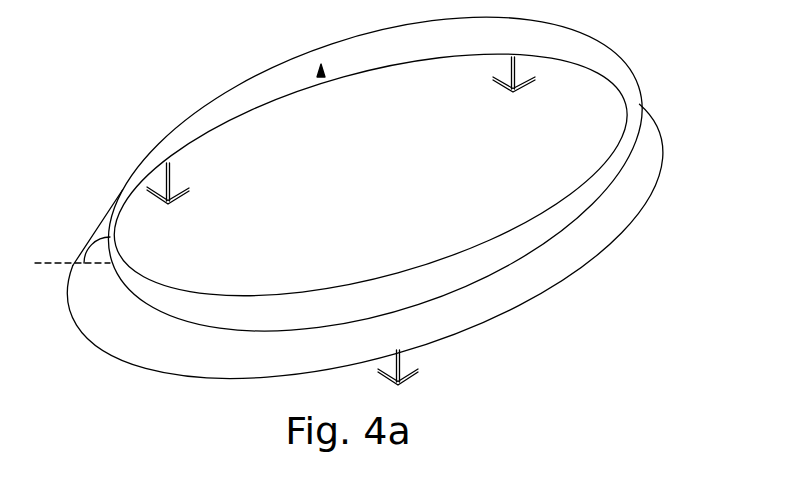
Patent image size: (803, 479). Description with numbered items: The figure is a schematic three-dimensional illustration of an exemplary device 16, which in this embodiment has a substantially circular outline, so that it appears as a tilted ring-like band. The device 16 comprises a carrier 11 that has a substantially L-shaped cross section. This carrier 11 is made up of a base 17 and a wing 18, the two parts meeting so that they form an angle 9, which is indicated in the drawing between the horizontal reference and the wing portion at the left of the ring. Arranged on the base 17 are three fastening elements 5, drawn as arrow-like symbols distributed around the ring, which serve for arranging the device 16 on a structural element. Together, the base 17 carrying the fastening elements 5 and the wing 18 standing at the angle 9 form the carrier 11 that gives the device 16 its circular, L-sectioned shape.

The fastening elements 5 is at (186, 216).
The angle 9 is at (102, 251).
The carrier 11 is at (322, 78).
The device 16 is at (384, 196).
The base 17 is at (552, 267).
The wing 18 is at (598, 185).